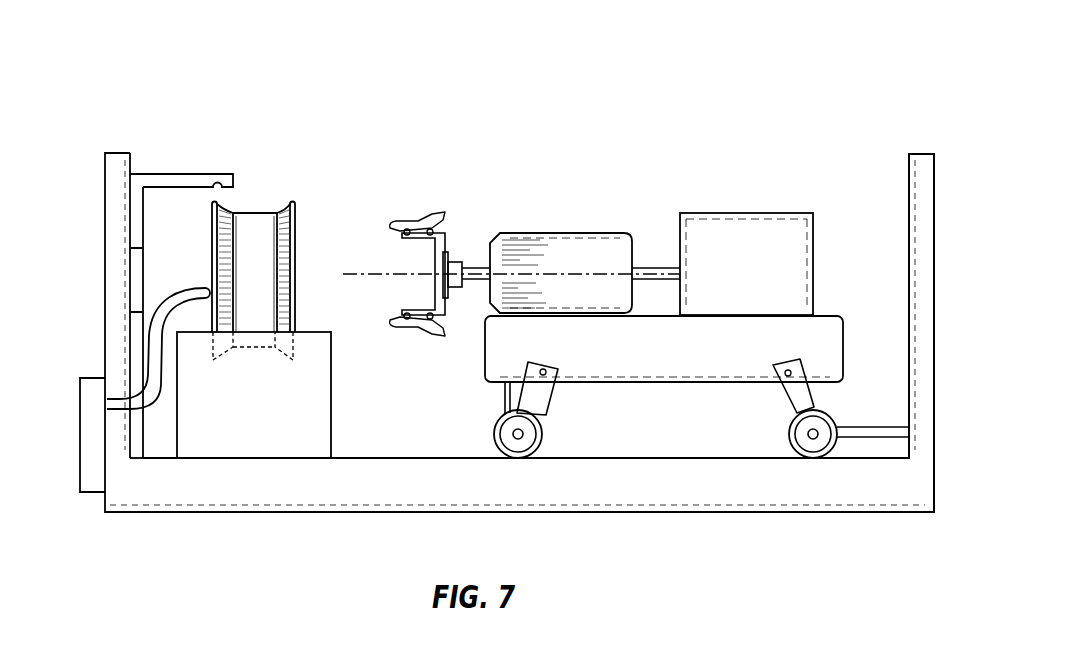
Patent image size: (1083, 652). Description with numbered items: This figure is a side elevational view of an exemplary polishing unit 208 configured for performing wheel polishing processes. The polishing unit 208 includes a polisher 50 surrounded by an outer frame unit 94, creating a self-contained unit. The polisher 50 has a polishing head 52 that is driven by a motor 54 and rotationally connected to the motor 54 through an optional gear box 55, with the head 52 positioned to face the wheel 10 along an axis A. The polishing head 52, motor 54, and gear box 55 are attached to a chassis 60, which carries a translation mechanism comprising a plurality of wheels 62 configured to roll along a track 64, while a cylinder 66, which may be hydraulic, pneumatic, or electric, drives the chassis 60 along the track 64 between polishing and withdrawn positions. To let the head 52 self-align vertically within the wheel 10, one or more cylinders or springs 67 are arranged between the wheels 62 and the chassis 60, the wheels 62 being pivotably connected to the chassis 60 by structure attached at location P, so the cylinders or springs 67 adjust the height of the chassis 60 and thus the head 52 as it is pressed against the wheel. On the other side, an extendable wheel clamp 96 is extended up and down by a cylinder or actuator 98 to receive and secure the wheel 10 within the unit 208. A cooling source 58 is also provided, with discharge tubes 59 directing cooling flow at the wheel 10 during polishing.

The polishing unit 208 is at (841, 55).
The wheel 10 is at (295, 208).
The polisher 50 is at (614, 151).
The polishing head 52 is at (415, 218).
The motor 54 is at (737, 213).
The gear box 55 is at (590, 237).
The cooling source 58 is at (87, 442).
The discharge tubes 59 is at (118, 397).
The chassis 60 is at (828, 313).
The wheels 62 is at (540, 433).
The track 64 is at (652, 457).
The cylinder 66 is at (888, 427).
The cylinders or springs 67 is at (502, 398).
The outer frame unit 94 is at (908, 173).
The wheel clamp 96 is at (193, 172).
The cylinder or actuator 98 is at (137, 285).
The axis A is at (363, 272).
The location P is at (545, 363).